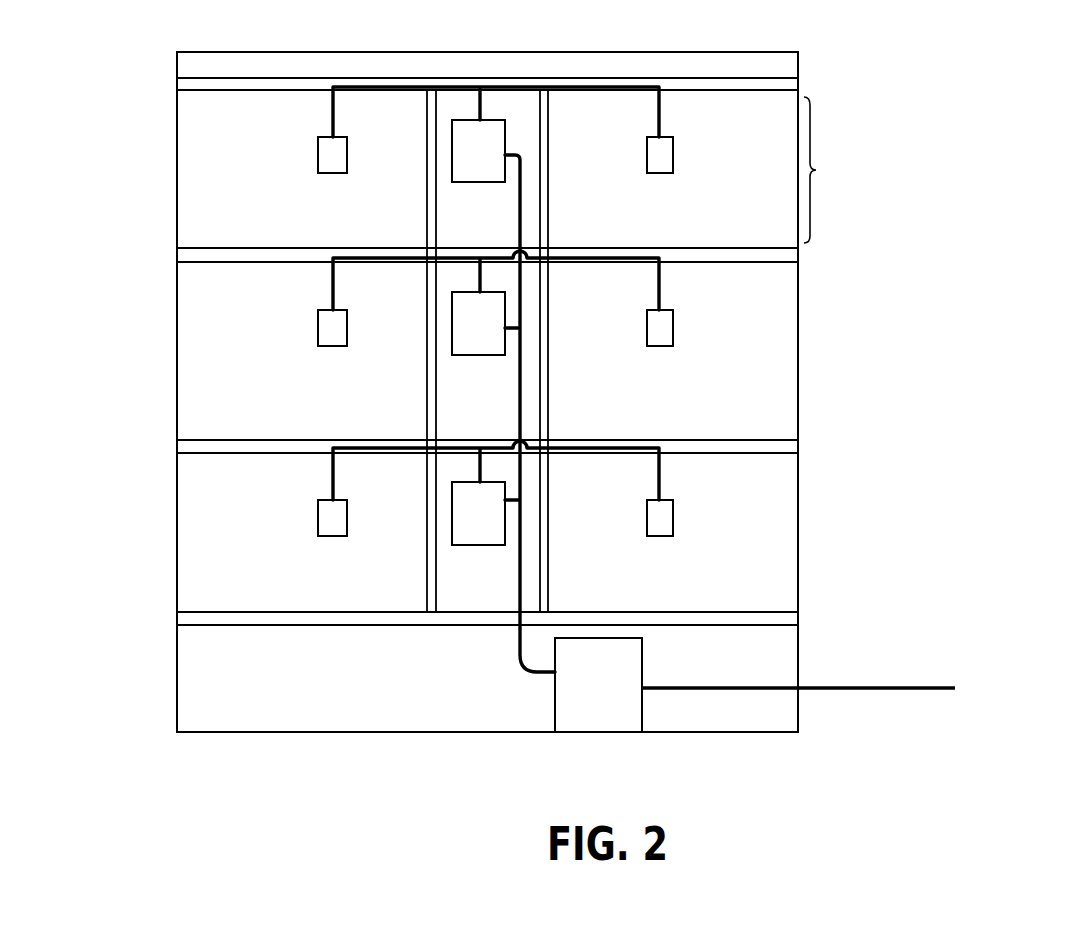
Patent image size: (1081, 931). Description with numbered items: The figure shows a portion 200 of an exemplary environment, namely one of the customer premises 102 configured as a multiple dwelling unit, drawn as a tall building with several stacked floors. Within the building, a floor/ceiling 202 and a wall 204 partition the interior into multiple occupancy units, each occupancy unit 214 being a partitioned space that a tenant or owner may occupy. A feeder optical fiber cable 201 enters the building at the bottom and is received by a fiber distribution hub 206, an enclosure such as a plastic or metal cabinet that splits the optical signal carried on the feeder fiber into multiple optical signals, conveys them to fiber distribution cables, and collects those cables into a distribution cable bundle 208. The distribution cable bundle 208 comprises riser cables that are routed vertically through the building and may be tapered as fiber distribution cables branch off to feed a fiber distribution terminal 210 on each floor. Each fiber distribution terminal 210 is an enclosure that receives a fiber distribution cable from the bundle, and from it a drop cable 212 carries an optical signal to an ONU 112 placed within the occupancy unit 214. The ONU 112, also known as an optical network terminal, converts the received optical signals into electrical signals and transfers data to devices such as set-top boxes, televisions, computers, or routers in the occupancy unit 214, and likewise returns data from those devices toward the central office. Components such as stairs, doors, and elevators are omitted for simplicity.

The portion 200 is at (952, 50).
The customer premises 102 is at (177, 350).
The floor/ceiling 202 is at (780, 86).
The wall 204 is at (549, 212).
The fiber distribution hub 206 is at (620, 698).
The distribution cable bundle 208 is at (518, 210).
The fiber distribution terminal 210 is at (497, 143).
The ONU 112 is at (673, 160).
The drop cable 212 is at (630, 85).
The occupancy unit 214 is at (834, 170).
The feeder optical fiber cable 201 is at (866, 688).